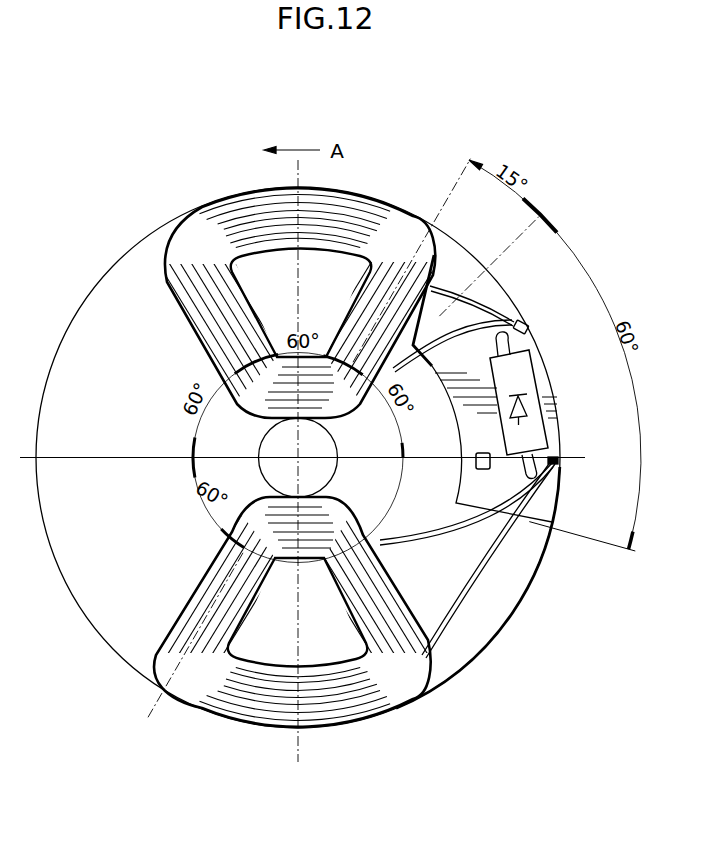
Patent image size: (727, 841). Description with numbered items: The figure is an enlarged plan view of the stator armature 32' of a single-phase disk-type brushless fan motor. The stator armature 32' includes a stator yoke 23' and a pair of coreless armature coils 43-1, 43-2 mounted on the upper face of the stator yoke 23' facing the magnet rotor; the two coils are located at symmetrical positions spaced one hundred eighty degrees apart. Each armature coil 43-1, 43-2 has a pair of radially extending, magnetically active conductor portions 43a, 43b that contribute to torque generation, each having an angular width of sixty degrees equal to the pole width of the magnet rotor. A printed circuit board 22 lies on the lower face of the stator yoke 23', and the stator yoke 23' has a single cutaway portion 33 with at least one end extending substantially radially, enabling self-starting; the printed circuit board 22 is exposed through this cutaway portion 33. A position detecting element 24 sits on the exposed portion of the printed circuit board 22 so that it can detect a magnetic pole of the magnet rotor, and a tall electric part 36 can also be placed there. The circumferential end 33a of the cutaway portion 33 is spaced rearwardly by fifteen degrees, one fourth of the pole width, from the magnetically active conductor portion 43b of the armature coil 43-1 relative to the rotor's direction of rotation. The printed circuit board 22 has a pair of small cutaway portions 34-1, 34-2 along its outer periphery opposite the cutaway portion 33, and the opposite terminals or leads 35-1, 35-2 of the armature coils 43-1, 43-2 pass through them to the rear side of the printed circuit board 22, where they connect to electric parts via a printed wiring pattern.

The printed circuit board 22 is at (553, 505).
The stator yoke 23' is at (478, 587).
The position detecting element 24 is at (489, 452).
The stator armature 32' is at (298, 417).
The cutaway portion 33 is at (486, 282).
The circumferential end 33a is at (478, 304).
The small cutaway portion 34-1 is at (528, 331).
The small cutaway portion 34-2 is at (560, 463).
The terminal or lead 35-1 is at (526, 321).
The terminal or lead 35-2 is at (538, 519).
The tall electric part 36 is at (535, 432).
The armature coil 43-1 is at (370, 222).
The armature coil 43-2 is at (257, 707).
The magnetically active conductor portion 43a is at (205, 303).
The magnetically active conductor portion 43b is at (370, 306).